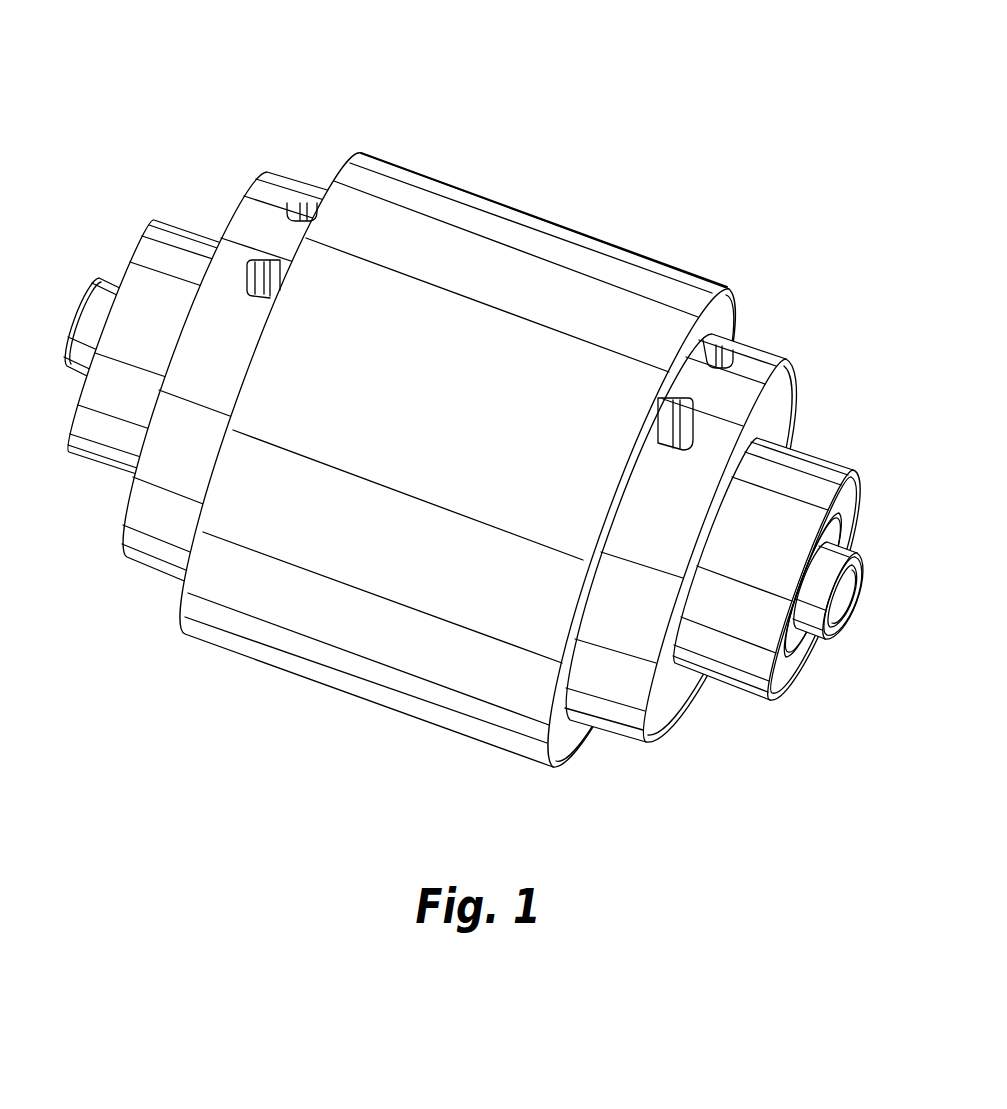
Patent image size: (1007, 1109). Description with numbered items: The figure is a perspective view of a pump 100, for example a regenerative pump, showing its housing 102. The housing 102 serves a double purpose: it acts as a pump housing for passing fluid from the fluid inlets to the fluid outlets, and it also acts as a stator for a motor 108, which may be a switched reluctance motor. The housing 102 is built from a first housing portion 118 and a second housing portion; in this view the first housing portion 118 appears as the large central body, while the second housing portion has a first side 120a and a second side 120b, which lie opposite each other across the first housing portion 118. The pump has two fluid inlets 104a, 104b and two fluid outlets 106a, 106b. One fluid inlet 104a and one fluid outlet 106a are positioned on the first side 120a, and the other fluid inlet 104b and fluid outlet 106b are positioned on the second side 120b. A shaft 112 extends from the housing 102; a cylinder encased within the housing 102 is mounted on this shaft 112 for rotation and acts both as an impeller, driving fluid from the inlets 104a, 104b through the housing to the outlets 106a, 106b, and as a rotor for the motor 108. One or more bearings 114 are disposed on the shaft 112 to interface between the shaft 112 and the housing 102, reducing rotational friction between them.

The pump 100 is at (818, 93).
The housing 102 is at (749, 263).
The fluid inlet 104a is at (298, 205).
The fluid inlet 104b is at (722, 357).
The fluid outlet 106a is at (268, 263).
The fluid outlet 106b is at (673, 432).
The motor 108 is at (598, 235).
The shaft 112 is at (830, 576).
The bearings 114 is at (838, 527).
The first housing portion 118 is at (490, 692).
The first side 120a is at (140, 513).
The second side 120b is at (680, 708).